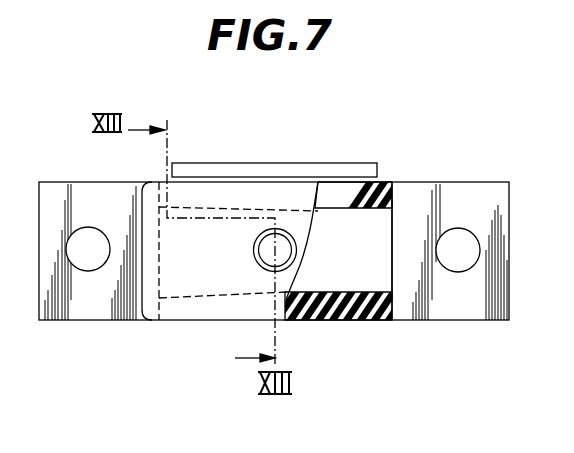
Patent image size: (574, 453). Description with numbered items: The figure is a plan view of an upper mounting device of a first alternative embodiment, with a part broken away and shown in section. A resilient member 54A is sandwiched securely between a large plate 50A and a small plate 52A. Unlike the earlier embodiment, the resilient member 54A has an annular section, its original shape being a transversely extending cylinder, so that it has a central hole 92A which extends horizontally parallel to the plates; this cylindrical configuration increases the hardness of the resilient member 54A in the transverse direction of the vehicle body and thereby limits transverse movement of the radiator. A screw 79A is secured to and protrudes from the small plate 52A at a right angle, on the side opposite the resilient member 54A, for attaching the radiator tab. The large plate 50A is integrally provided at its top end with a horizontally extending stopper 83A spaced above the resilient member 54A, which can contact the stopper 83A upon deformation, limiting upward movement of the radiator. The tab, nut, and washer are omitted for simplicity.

The large plate 50A is at (490, 312).
The small plate 52A is at (150, 312).
The resilient member 54A is at (405, 225).
The screw 79A is at (256, 268).
The stopper 83A is at (288, 161).
The central hole 92A is at (356, 321).